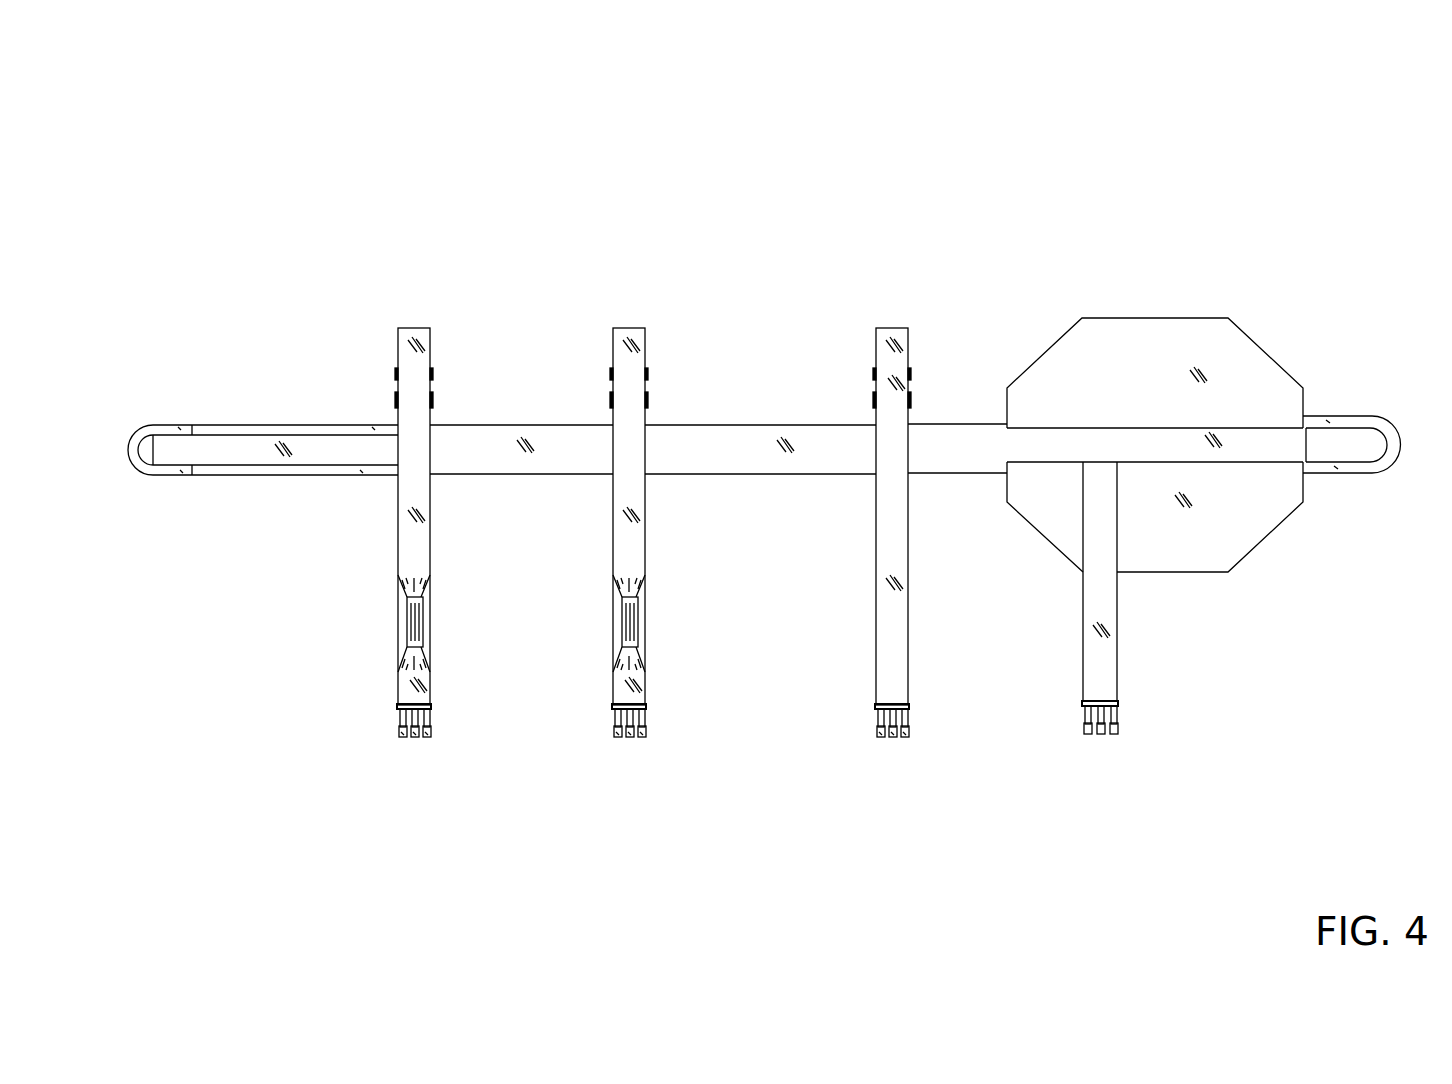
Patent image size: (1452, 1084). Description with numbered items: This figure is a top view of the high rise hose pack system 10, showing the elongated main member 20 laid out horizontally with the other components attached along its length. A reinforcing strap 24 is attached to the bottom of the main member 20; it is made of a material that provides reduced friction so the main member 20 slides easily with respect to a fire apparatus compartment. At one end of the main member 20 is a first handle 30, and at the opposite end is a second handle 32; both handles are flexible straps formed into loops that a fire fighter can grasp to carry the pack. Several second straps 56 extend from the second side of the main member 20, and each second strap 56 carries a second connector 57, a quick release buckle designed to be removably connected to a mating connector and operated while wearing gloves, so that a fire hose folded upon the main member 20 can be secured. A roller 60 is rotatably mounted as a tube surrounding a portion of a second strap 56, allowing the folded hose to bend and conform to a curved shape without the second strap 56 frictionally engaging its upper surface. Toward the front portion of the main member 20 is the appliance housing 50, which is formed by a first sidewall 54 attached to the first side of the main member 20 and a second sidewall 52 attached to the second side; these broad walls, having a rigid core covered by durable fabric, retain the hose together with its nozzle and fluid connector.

The high rise hose pack system 10 is at (230, 122).
The main member 20 is at (546, 426).
The reinforcing strap 24 is at (243, 445).
The first handle 30 is at (143, 472).
The second handle 32 is at (1378, 473).
The appliance housing 50 is at (1240, 566).
The second sidewall 52 is at (1255, 357).
The first sidewall 54 is at (1260, 527).
The second strap 56 is at (635, 550).
The second connector 57 is at (430, 730).
The roller 60 is at (423, 622).